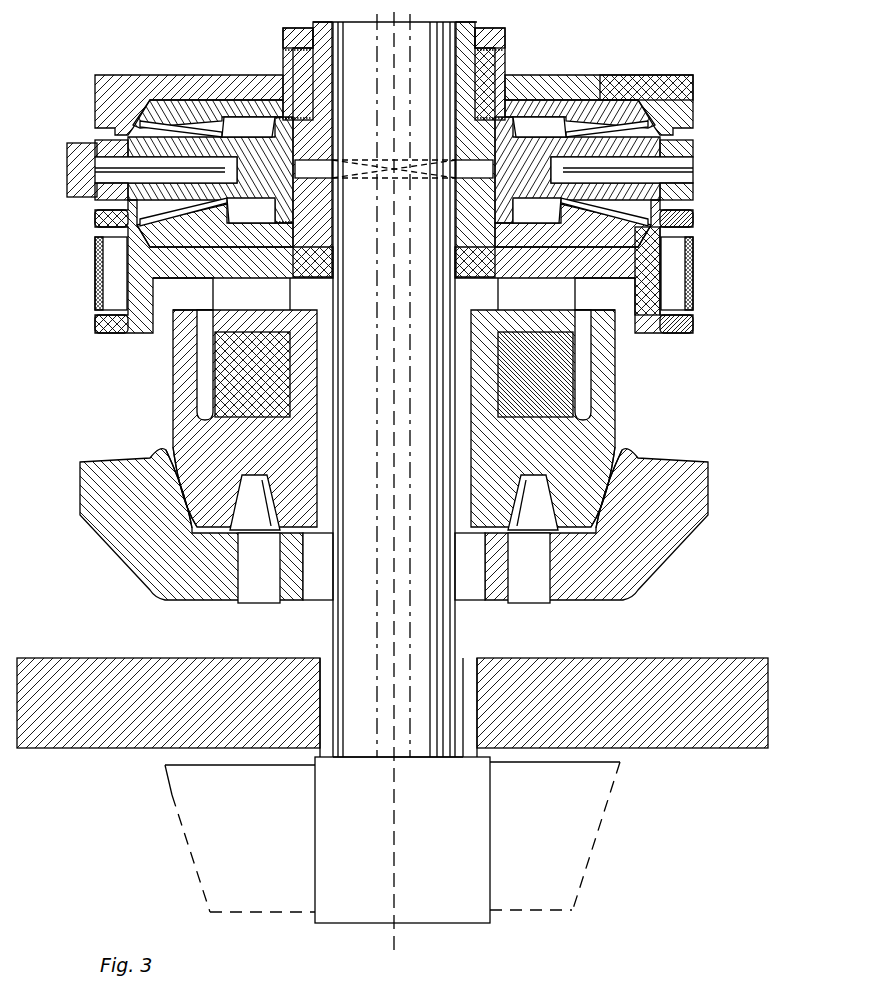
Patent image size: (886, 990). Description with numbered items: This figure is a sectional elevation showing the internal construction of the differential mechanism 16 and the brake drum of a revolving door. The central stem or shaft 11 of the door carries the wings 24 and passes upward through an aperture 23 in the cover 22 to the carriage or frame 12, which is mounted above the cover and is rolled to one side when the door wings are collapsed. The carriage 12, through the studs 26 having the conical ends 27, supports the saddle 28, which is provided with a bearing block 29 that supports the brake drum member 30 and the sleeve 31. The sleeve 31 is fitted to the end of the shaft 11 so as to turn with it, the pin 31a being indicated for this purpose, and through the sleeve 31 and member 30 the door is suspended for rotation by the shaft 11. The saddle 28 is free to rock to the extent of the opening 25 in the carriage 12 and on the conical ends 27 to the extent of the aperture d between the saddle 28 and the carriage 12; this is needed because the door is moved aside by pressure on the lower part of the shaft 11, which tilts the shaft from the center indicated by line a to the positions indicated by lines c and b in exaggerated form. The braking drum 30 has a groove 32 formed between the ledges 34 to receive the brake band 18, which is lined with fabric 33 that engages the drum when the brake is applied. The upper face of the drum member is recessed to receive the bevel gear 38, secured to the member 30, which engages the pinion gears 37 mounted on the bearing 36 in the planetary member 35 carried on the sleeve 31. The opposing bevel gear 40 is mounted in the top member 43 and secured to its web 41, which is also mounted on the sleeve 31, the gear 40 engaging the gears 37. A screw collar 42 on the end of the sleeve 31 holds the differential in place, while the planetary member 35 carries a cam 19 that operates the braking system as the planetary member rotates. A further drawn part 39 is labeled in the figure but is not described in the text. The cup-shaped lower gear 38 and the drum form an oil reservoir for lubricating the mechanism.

The central stem or shaft 11 is at (395, 389).
The carriage or frame 12 is at (145, 578).
The differential mechanism 16 is at (361, 177).
The brake band 18 is at (95, 283).
The cam 19 is at (67, 190).
The cover 22 is at (722, 654).
The aperture 23 is at (470, 745).
The wings 24 is at (392, 840).
The opening 25 is at (313, 605).
The studs 26 is at (268, 605).
The conical ends 27 is at (258, 520).
The saddle 28 is at (607, 437).
The bearing block 29 is at (175, 402).
The brake drum member 30 is at (560, 318).
The sleeve 31 is at (478, 262).
The pin 31a is at (340, 188).
The groove 32 is at (120, 313).
The fabric lining 33 is at (95, 262).
The ledges 34 is at (697, 212).
The planetary member 35 is at (100, 205).
The bearing 36 is at (67, 172).
The pinion gears 37 is at (115, 133).
The bevel gear 38 is at (670, 226).
The pocket 39 is at (190, 263).
The opposing bevel gear 40 is at (640, 74).
The web 41 is at (595, 74).
The screw collar 42 is at (283, 45).
The top member 43 is at (700, 97).
The center line a is at (392, 477).
The tilted position line b is at (417, 378).
The tilted position line c is at (366, 378).
The aperture d is at (165, 445).